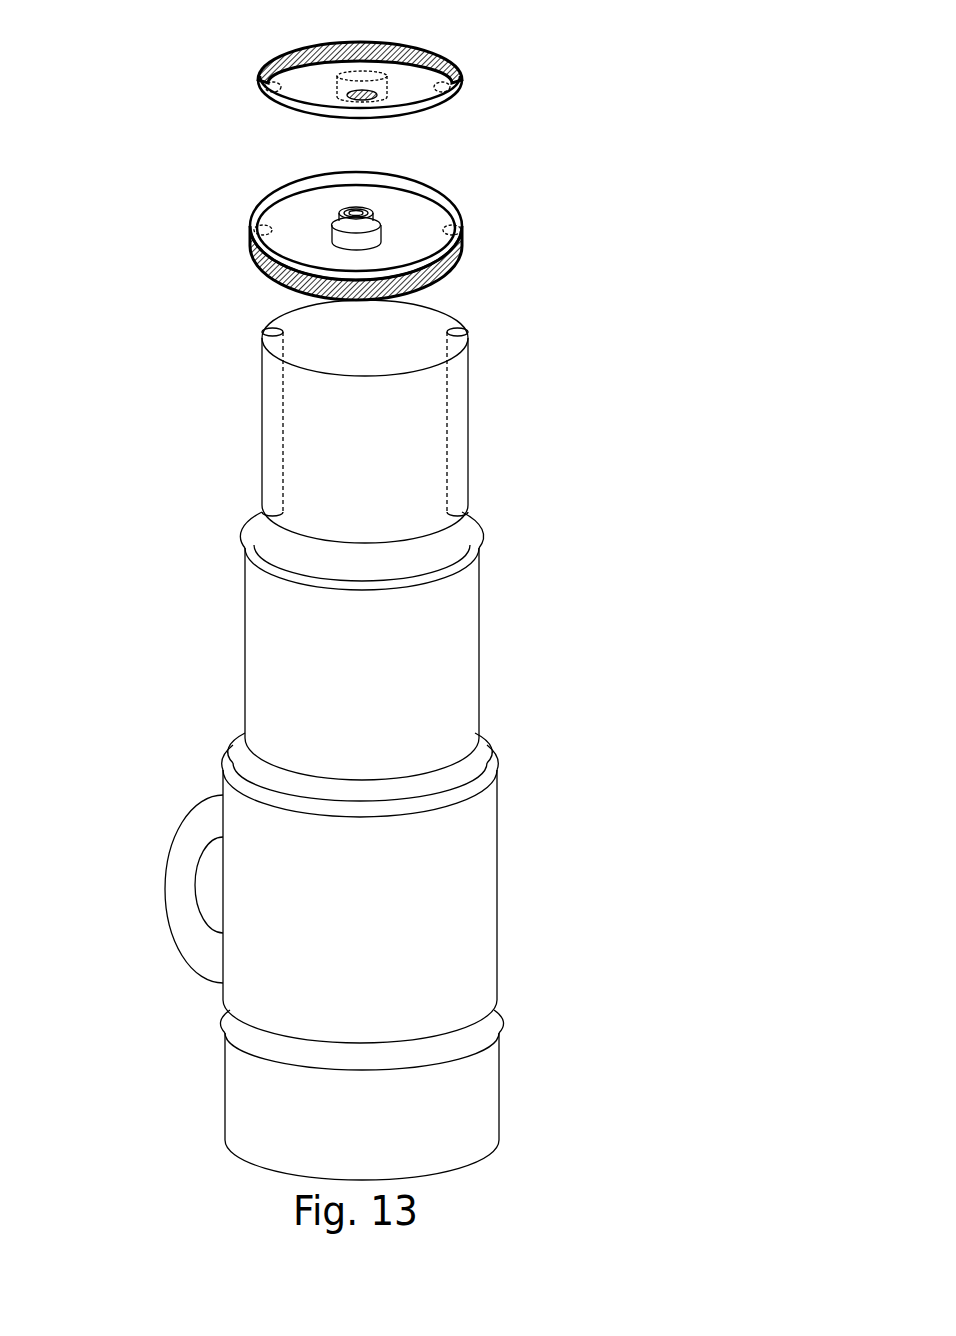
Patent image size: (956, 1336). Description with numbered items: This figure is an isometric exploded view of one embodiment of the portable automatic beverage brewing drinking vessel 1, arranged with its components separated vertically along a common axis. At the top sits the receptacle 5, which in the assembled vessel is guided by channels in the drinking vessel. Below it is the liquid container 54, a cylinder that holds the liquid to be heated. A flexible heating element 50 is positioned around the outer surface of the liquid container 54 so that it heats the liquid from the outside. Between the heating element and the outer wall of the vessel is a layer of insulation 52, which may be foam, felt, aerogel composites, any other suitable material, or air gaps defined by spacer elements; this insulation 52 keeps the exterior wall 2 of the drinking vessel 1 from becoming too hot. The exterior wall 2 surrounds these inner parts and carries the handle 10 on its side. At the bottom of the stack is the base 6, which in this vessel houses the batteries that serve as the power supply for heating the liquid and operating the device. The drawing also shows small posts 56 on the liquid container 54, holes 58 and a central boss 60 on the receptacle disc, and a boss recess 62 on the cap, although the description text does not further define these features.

The drinking vessel 1 is at (354, 952).
The exterior wall 2 is at (452, 868).
The receptacle 5 is at (505, 70).
The base 6 is at (458, 1095).
The handle 10 is at (208, 827).
The flexible heating element 50 is at (450, 650).
The insulation 52 is at (475, 783).
The liquid container 54 is at (400, 493).
The posts 56 is at (272, 330).
The holes 58 is at (460, 232).
The boss 60 is at (383, 228).
The boss recess 62 is at (383, 124).